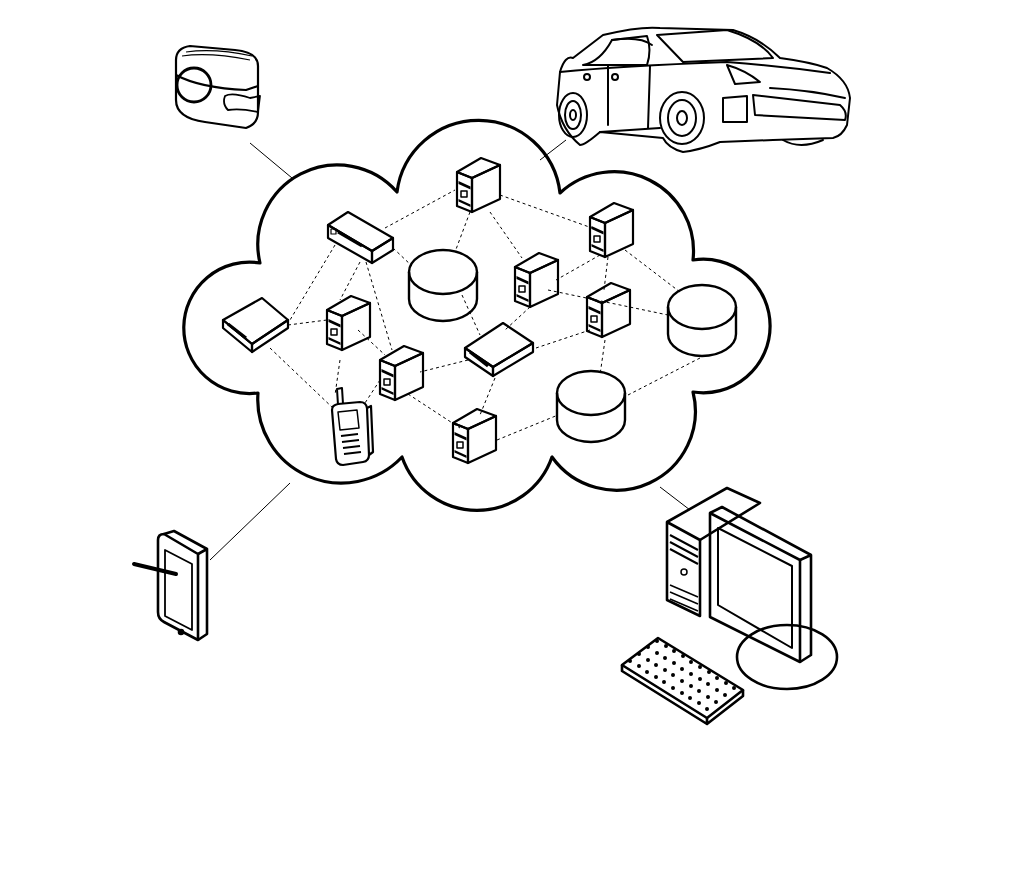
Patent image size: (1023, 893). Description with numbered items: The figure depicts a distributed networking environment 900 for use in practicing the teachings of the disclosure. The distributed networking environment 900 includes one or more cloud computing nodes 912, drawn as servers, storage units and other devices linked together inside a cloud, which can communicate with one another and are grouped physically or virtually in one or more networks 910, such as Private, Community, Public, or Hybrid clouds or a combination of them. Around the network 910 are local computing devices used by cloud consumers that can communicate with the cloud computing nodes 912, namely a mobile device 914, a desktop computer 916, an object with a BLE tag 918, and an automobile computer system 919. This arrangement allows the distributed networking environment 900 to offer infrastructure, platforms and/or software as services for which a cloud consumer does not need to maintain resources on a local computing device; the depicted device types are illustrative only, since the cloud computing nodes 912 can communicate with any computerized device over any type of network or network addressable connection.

The distributed networking environment 900 is at (978, 96).
The network 910 is at (462, 508).
The cloud computing node 912 is at (407, 424).
The mobile device 914 is at (176, 630).
The desktop computer 916 is at (776, 688).
The object with a BLE tag 918 is at (200, 122).
The automobile computer system 919 is at (788, 142).